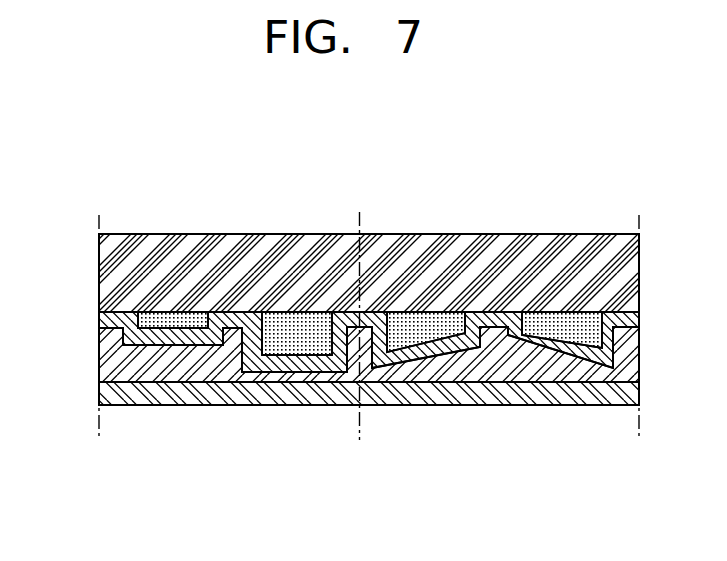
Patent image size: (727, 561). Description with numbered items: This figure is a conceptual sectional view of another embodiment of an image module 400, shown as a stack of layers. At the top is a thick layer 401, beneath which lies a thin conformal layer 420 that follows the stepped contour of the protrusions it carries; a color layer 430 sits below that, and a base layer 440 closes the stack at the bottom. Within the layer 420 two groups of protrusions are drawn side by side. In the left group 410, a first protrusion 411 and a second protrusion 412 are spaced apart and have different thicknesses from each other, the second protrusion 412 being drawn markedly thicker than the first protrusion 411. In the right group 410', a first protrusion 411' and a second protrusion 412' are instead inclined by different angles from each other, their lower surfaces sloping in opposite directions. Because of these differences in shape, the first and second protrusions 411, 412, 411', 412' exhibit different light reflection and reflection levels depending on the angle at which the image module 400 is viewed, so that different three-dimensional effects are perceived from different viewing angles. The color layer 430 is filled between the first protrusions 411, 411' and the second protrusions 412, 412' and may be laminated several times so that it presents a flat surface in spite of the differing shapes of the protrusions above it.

The image module 400 is at (111, 197).
The substrate 401 is at (105, 273).
The first sensor electrode pattern 410 is at (235, 413).
The first protrusion 411 is at (173, 394).
The second protrusion 412 is at (297, 394).
The second sensor electrode pattern 410' is at (494, 413).
The first protrusion 411' is at (426, 394).
The second protrusion 412' is at (562, 394).
The insulating layer 420 is at (105, 322).
The color layer 430 is at (106, 358).
The base layer 440 is at (106, 394).